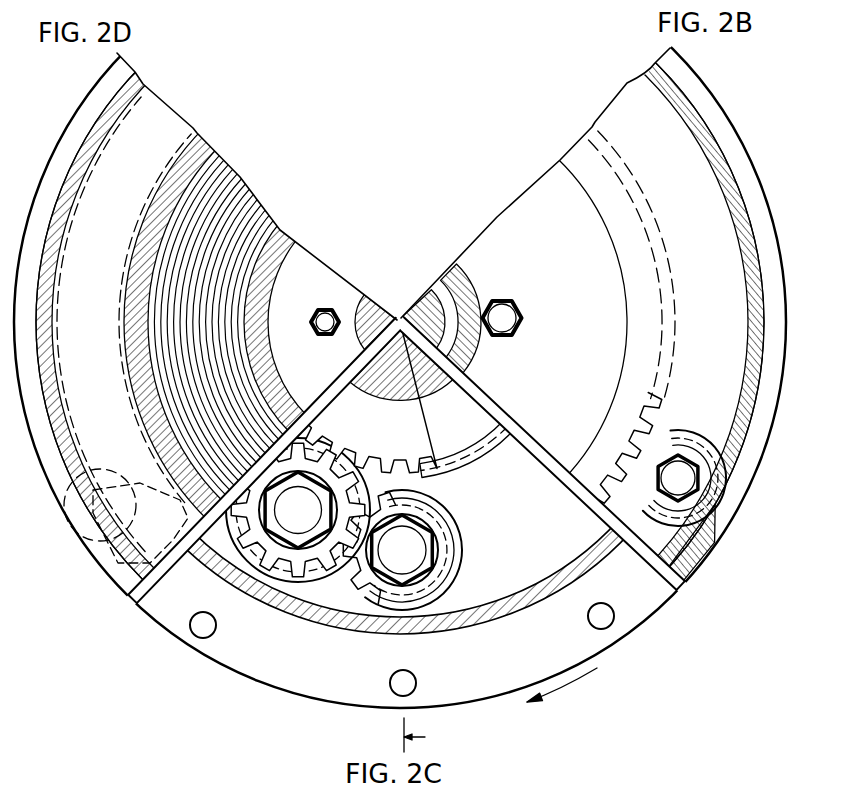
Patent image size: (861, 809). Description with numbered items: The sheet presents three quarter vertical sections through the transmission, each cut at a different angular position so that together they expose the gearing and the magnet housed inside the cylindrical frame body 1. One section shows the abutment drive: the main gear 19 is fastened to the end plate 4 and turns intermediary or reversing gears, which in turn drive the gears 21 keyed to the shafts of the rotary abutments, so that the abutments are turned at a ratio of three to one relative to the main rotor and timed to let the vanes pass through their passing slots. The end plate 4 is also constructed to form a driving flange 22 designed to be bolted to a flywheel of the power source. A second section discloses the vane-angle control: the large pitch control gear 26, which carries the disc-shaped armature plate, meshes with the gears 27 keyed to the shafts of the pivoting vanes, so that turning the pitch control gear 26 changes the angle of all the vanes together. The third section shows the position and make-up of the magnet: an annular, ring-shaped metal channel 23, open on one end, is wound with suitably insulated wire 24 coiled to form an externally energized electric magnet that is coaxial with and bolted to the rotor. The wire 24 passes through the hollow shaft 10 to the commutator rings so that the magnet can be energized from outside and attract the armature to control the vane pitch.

In FIG. 2B, the cylindrical frame body 1 is at (400, 343).
In FIG. 2C, the cylindrical frame body 1 is at (414, 735).
In FIG. 2C, the end plate 4 is at (498, 606).
In FIG. 2B, the hollow shaft 10 is at (430, 332).
In FIG. 2C, the main gear 19 is at (399, 400).
In FIG. 2C, the gear 21 is at (436, 516).
In FIG. 2B, the driving flange 22 is at (737, 152).
In FIG. 2C, the driving flange 22 is at (400, 354).
In FIG. 2D, the annular metal channel 23 is at (128, 343).
In FIG. 2D, the wire 24 is at (240, 357).
In FIG. 2B, the pitch control gear 26 is at (672, 332).
In FIG. 2B, the gear 27 is at (700, 442).